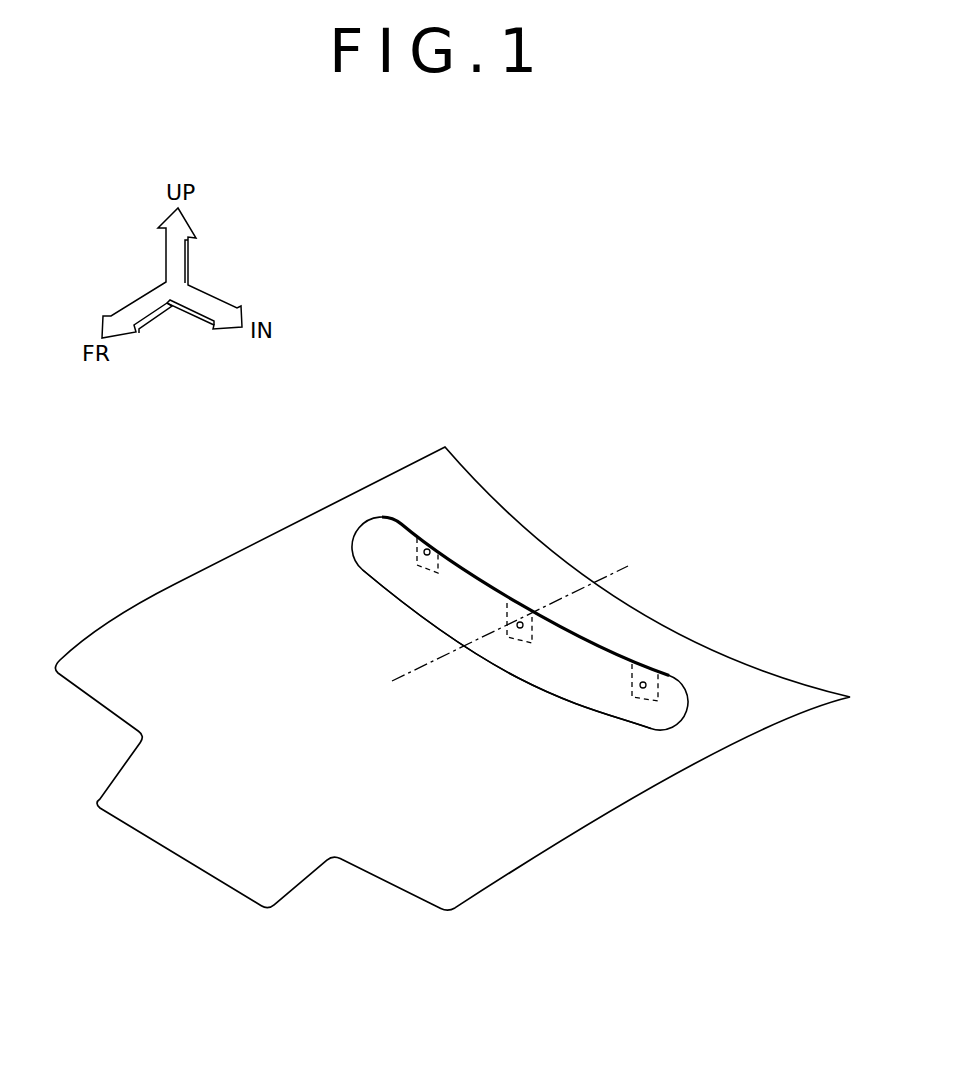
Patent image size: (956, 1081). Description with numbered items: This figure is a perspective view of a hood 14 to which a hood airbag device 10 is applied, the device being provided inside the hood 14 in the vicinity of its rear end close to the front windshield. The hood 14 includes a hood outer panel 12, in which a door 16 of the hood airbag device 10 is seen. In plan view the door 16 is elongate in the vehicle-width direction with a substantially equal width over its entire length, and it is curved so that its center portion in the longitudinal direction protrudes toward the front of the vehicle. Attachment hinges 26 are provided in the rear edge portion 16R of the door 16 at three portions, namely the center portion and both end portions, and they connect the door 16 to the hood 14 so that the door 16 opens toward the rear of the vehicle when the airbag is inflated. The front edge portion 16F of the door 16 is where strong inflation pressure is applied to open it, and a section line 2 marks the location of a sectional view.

The hood airbag device 10 is at (379, 500).
The hood outer panel 12 is at (284, 555).
The hood 14 is at (142, 557).
The door 16 is at (398, 603).
The rear edge portion 16R is at (480, 577).
The front edge portion 16F is at (550, 700).
The attachment hinge 26 is at (420, 558).
The section line 2- 2 is at (630, 566).